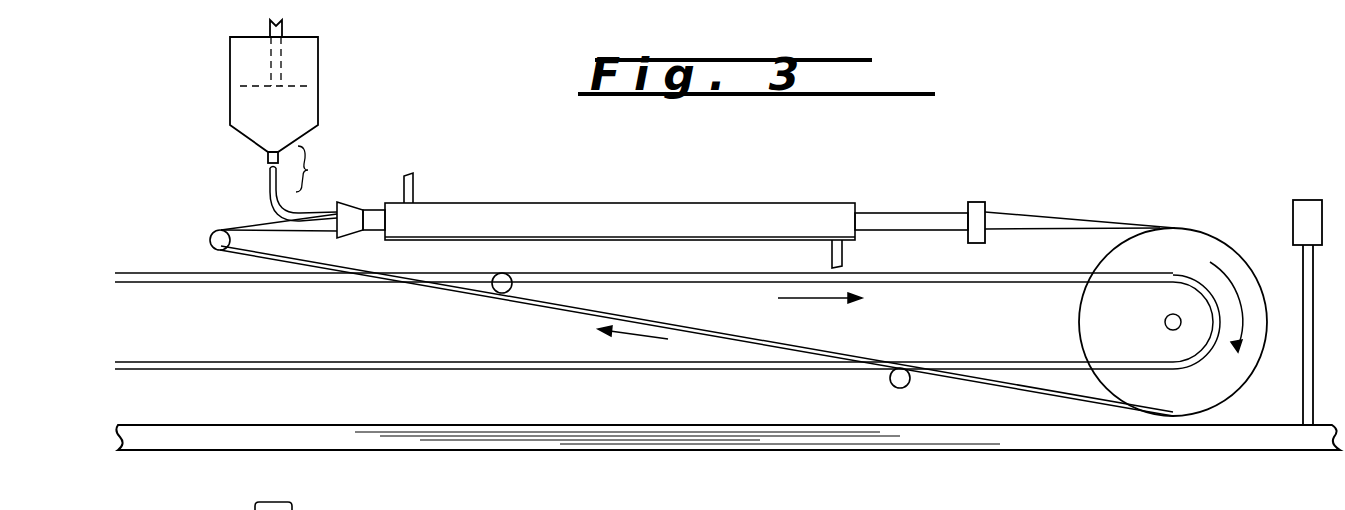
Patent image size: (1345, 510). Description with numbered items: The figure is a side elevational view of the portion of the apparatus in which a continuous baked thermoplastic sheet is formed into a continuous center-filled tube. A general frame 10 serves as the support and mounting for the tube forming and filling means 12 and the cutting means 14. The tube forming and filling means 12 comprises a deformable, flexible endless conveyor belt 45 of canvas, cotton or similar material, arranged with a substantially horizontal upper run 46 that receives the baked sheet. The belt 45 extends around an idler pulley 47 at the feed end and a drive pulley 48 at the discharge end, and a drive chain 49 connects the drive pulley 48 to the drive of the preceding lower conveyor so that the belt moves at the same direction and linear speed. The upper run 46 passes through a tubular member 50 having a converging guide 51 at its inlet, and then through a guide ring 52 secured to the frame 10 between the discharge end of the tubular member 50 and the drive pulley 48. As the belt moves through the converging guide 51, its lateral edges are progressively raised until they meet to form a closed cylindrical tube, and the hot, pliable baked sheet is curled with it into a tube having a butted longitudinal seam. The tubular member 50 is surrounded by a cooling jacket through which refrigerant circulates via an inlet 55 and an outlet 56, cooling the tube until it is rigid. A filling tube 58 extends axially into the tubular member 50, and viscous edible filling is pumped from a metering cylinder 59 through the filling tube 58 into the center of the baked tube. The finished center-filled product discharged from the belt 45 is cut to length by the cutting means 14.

The general frame 10 is at (792, 422).
The tube forming and filling means 12 is at (738, 192).
The cutting means 14 is at (1314, 196).
The deformable flexible endless conveyor belt 45 is at (280, 262).
The upper run 46 is at (243, 233).
The idler pulley 47 is at (210, 239).
The drive pulley 48 is at (1238, 268).
The drive chain 49 is at (204, 283).
The tubular member 50 is at (630, 213).
The converging guide 51 is at (350, 210).
The guide ring 52 is at (985, 205).
The inlet 55 is at (417, 186).
The outlet 56 is at (845, 250).
The filling tube 58 is at (269, 181).
The metering cylinder 59 is at (310, 99).